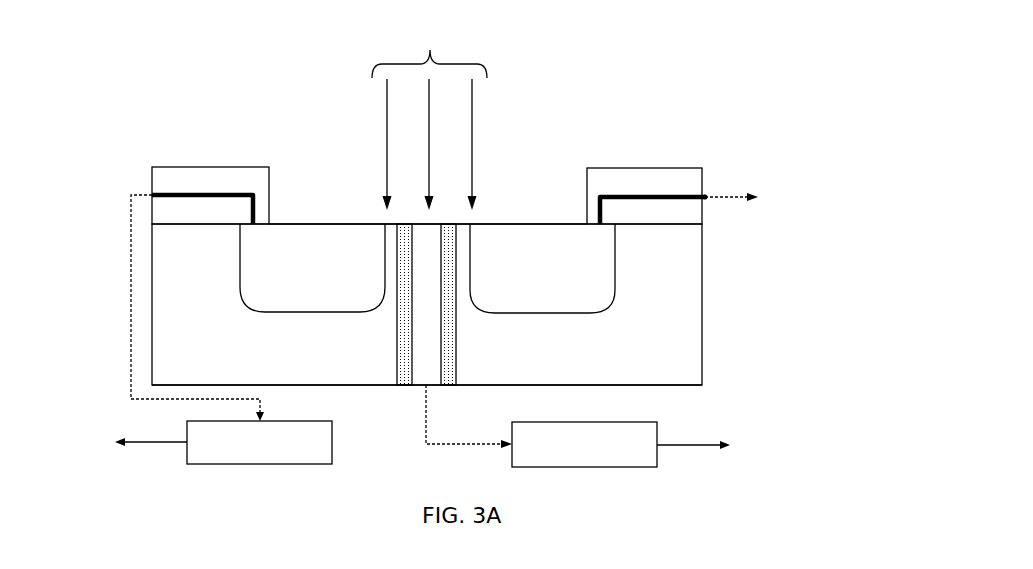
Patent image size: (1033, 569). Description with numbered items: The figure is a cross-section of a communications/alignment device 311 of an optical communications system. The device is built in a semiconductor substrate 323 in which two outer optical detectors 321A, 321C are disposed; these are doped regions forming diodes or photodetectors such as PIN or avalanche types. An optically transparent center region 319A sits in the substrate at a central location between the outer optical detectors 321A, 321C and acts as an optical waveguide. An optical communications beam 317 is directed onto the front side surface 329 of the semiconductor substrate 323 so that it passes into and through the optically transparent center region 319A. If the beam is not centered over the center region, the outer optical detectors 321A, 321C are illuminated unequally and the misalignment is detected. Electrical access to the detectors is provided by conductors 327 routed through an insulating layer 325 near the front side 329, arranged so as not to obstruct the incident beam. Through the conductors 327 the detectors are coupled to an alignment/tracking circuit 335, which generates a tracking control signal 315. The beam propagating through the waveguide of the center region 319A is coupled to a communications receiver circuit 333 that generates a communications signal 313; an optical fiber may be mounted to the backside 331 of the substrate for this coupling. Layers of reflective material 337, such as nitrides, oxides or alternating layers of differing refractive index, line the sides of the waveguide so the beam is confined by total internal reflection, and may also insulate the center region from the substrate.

The communications/alignment device 311 is at (782, 48).
The communications signal 313 is at (765, 420).
The tracking control signal 315 is at (80, 418).
The optical communications beam 317 is at (430, 50).
The optically transparent center region 319A is at (420, 344).
The outer optical detector 321A is at (543, 313).
The outer optical detector 321C is at (310, 312).
The semiconductor substrate 323 is at (703, 298).
The insulating layer 325 is at (152, 180).
The conductors 327 is at (197, 195).
The front side surface 329 is at (533, 168).
The backside 331 is at (687, 385).
The communications receiver circuit 333 is at (585, 467).
The alignment/tracking circuit 335 is at (258, 464).
The layers of reflective material 337 is at (413, 373).